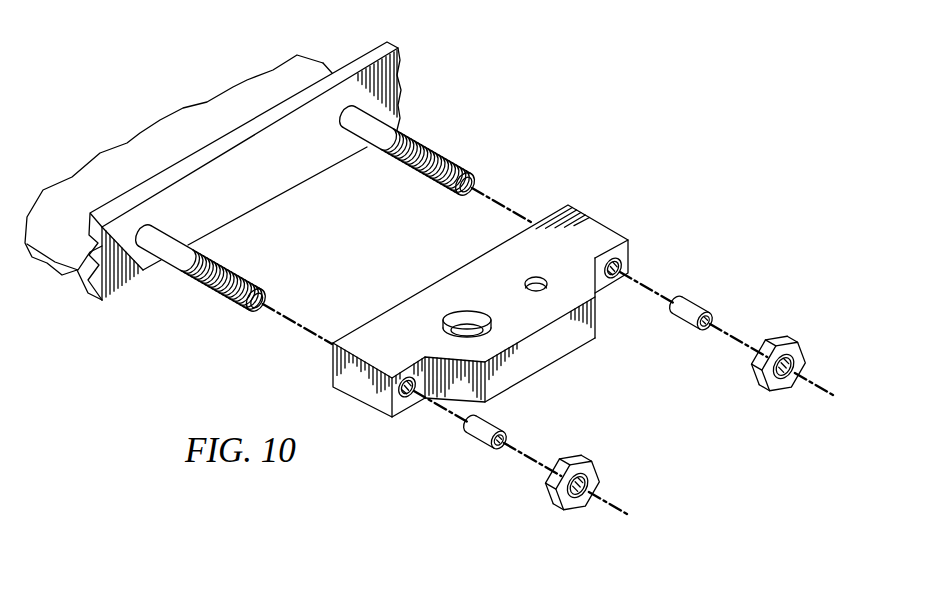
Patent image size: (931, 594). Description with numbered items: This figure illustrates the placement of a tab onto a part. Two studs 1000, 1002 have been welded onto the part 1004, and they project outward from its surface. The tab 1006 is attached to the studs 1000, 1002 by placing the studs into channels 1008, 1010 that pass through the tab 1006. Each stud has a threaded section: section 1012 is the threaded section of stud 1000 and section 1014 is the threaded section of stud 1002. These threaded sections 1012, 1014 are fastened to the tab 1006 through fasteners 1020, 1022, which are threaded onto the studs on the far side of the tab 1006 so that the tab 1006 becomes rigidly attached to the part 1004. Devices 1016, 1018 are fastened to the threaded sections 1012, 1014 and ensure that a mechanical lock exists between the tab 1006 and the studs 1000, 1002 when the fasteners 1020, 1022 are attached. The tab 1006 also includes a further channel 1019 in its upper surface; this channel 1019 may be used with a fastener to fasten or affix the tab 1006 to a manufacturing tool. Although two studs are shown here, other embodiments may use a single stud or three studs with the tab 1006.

The stud 1000 is at (403, 197).
The stud 1002 is at (216, 309).
The part 1004 is at (253, 201).
The tab 1006 is at (608, 236).
The channel 1008 is at (622, 268).
The channel 1010 is at (412, 400).
The threaded section 1012 is at (446, 198).
The threaded section 1014 is at (231, 320).
The device 1016 is at (703, 308).
The device 1018 is at (487, 446).
The channel 1019 is at (467, 318).
The fastener 1020 is at (782, 342).
The fastener 1022 is at (597, 443).